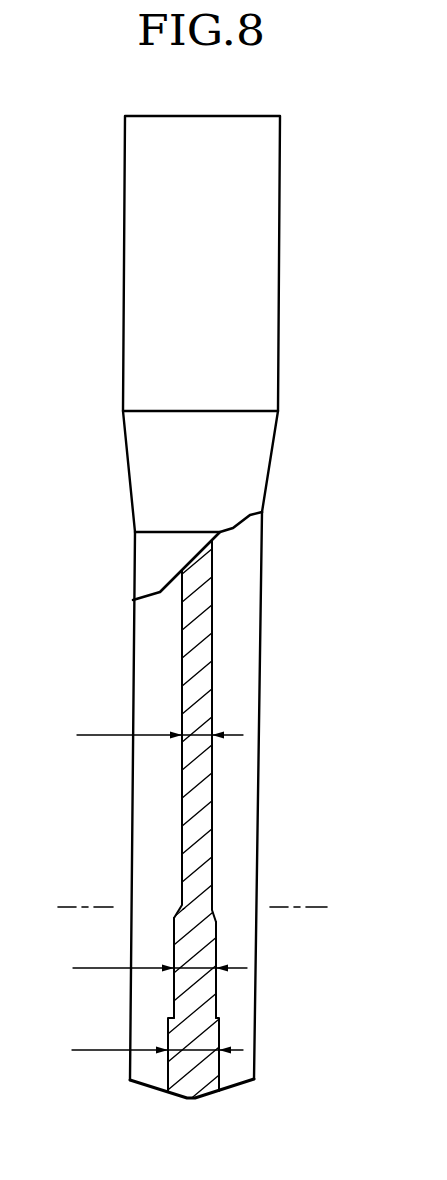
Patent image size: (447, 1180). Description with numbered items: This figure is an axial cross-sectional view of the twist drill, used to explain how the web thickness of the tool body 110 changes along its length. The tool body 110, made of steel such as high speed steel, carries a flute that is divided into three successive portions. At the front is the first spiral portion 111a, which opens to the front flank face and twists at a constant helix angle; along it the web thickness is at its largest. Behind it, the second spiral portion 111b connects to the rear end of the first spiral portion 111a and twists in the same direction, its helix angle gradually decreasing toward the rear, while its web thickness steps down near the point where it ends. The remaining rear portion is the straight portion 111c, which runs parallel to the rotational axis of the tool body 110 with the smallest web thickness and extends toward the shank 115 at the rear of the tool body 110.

The shank 115 is at (265, 290).
The tool body 110 is at (270, 465).
The straight portion 111c is at (247, 825).
The second spiral portion 111b is at (247, 942).
The first spiral portion 111a is at (243, 1067).